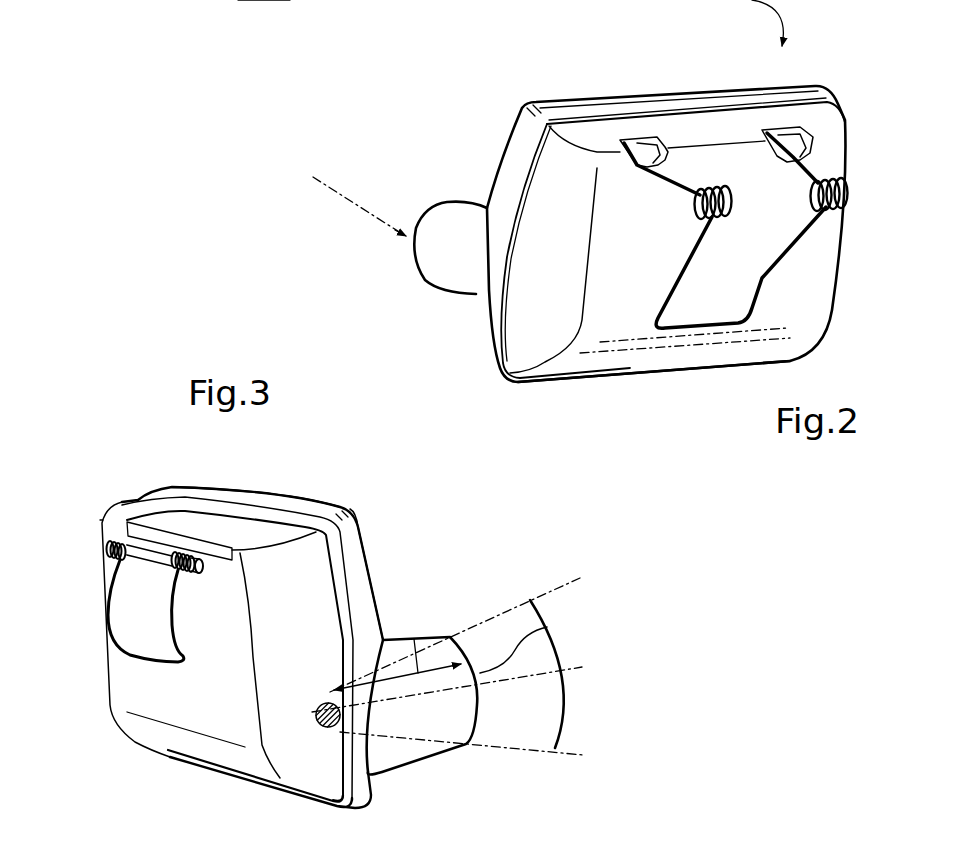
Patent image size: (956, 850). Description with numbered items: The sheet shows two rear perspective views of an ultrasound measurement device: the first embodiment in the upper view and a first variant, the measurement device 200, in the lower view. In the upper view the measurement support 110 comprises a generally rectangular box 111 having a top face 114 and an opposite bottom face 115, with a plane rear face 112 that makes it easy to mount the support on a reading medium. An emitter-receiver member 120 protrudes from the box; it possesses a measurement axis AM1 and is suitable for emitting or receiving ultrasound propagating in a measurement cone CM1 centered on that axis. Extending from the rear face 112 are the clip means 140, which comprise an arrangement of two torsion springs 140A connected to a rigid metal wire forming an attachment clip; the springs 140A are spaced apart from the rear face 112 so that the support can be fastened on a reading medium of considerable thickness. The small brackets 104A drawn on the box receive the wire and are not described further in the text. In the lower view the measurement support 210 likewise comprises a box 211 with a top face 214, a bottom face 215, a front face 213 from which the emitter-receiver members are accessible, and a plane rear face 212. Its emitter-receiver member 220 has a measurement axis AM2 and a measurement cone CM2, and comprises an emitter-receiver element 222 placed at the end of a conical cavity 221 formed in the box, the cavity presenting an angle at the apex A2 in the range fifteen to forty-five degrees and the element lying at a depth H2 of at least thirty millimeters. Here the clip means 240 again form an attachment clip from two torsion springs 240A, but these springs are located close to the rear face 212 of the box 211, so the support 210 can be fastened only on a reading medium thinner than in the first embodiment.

In FIG. 2, the measurement cone CM1 is at (264, 6).
In FIG. 2, the measurement support 110 is at (592, 108).
In FIG. 2, the box 111 is at (533, 323).
In FIG. 2, the rear face 112 is at (697, 301).
In FIG. 2, the top face 114 is at (703, 123).
In FIG. 2, the bottom face 115 is at (527, 383).
In FIG. 2, the emitter-receiver member 120 is at (412, 237).
In FIG. 2, the first hook 104A is at (695, 199).
In FIG. 2, the torsion springs 140A is at (805, 200).
In FIG. 2, the clip means 140 is at (781, 253).
In FIG. 2, the measurement axis AM1 is at (333, 182).
In FIG. 3, the measurement device 200 is at (143, 452).
In FIG. 3, the measurement support 210 is at (328, 585).
In FIG. 3, the box 211 is at (280, 753).
In FIG. 3, the rear face 212 is at (207, 698).
In FIG. 3, the front face 213 is at (368, 537).
In FIG. 3, the top face 214 is at (300, 500).
In FIG. 3, the bottom face 215 is at (316, 802).
In FIG. 3, the emitter-receiver member 220 is at (482, 713).
In FIG. 3, the cavity 221 is at (553, 623).
In FIG. 3, the emitter-receiver element 222 is at (320, 713).
In FIG. 3, the clip means 240 is at (103, 628).
In FIG. 3, the torsion springs 240A is at (108, 545).
In FIG. 3, the depth H2 is at (414, 639).
In FIG. 3, the measurement cone CM2 is at (556, 577).
In FIG. 3, the measurement axis AM2 is at (583, 668).
In FIG. 3, the angle at the apex A2 is at (563, 720).